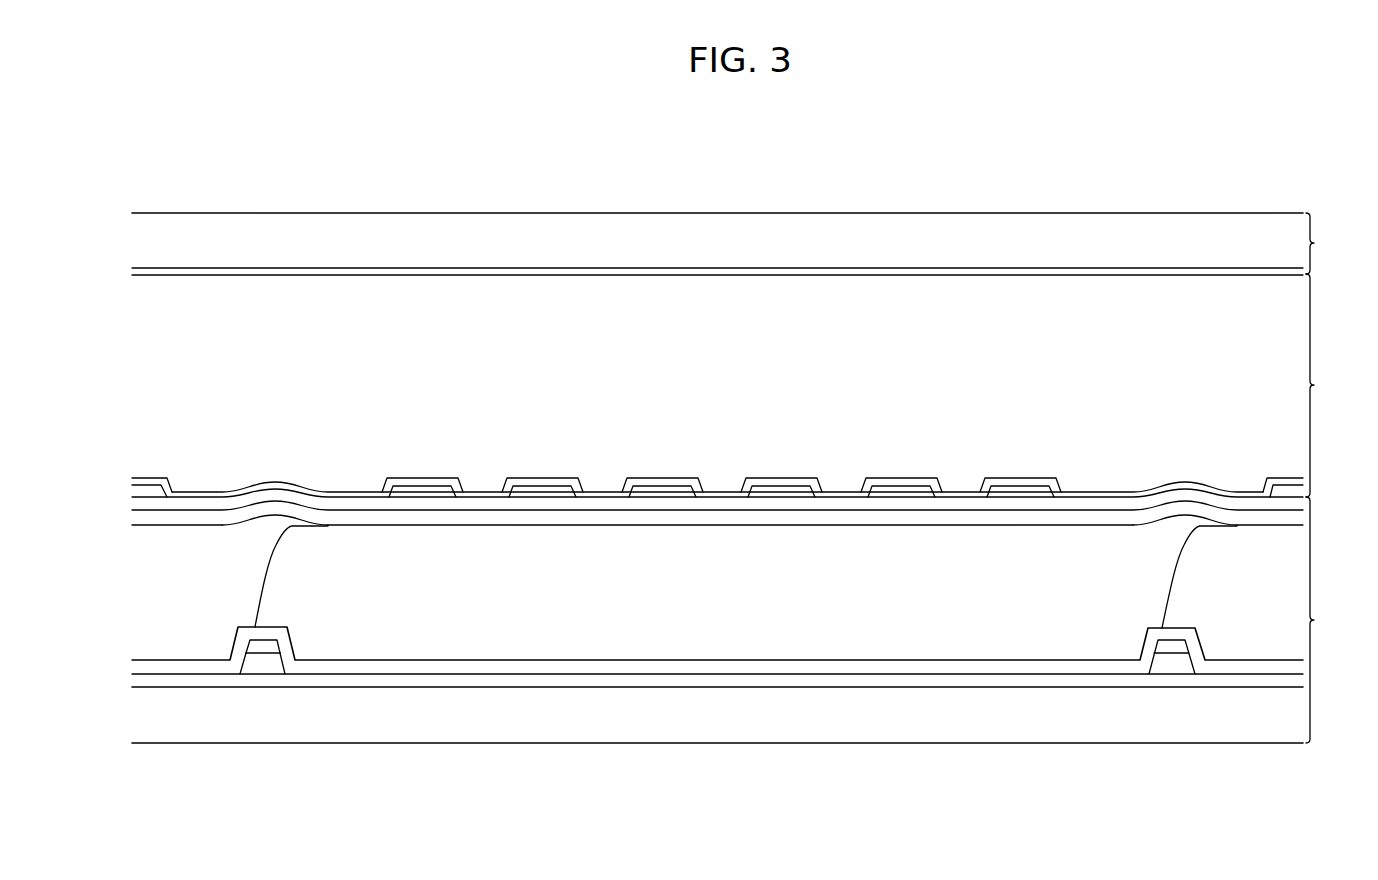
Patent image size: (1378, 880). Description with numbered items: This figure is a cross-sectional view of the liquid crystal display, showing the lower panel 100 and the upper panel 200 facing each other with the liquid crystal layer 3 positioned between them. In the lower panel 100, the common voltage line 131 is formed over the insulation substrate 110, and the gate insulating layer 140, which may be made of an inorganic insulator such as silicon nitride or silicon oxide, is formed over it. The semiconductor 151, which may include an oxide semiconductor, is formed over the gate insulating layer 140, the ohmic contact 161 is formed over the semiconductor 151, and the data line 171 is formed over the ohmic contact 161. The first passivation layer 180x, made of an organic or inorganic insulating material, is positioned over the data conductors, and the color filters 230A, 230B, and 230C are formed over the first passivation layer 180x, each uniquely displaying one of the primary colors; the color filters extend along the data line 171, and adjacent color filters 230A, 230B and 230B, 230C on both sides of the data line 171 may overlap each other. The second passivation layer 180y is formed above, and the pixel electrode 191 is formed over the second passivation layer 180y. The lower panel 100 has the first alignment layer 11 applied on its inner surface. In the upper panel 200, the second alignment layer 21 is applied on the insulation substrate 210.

The insulation substrate 210 is at (513, 233).
The second alignment layer 21 is at (680, 275).
The upper panel 200 is at (1331, 243).
The liquid crystal layer 3 is at (1320, 385).
The lower panel 100 is at (1331, 620).
The pixel electrode 191 is at (150, 493).
The first alignment layer 11 is at (1173, 480).
The second passivation layer 180y is at (840, 505).
The common voltage line 131 is at (960, 520).
The color filter 230A is at (167, 620).
The color filter 230B is at (502, 620).
The color filter 230C is at (1245, 618).
The first passivation layer 180x is at (883, 665).
The data line 171 is at (252, 648).
The ohmic contact 161 is at (265, 658).
The semiconductor 151 is at (280, 668).
The gate insulating layer 140 is at (757, 680).
The insulation substrate 110 is at (650, 722).